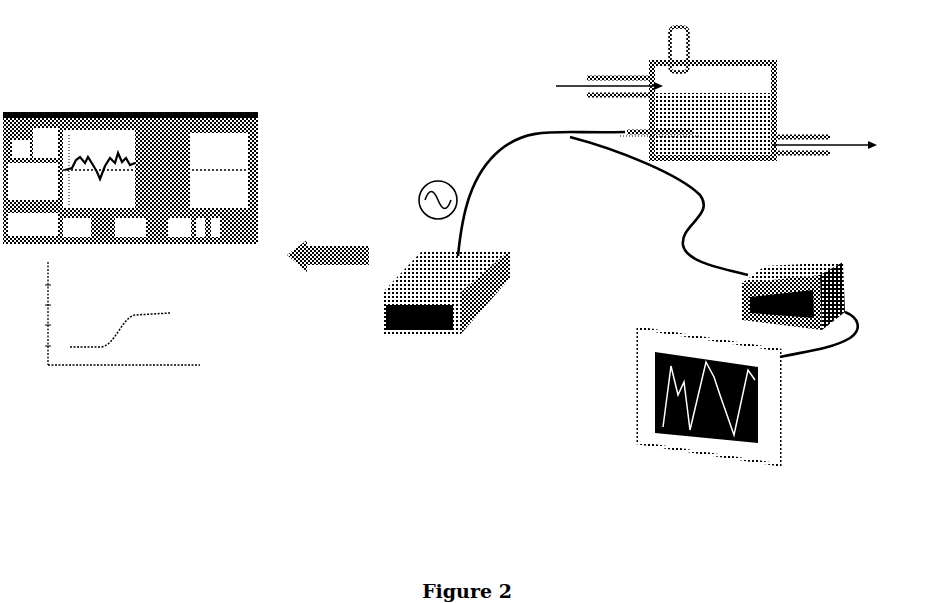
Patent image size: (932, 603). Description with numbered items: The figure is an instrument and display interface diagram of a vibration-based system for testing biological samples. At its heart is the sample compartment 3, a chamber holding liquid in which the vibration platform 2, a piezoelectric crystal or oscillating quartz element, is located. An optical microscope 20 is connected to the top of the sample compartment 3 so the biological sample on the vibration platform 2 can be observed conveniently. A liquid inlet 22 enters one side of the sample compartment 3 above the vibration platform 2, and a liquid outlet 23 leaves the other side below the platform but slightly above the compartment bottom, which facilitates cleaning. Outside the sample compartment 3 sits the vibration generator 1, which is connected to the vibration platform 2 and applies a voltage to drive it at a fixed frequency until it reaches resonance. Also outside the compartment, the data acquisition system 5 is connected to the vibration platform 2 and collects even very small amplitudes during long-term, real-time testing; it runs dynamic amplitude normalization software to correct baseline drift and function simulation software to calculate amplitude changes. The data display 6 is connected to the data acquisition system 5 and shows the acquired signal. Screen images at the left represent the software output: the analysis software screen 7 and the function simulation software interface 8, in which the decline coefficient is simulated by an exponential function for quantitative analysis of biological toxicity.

The vibration generator 1 is at (548, 278).
The vibration platform 2 is at (706, 133).
The sample compartment 3 is at (823, 79).
The data acquisition system 5 is at (860, 293).
The data display 6 is at (585, 365).
The analysis software screen 7 is at (313, 174).
The function simulation software interface 8 is at (245, 337).
The optical microscope 20 is at (663, 42).
The liquid inlet 22 is at (505, 88).
The liquid outlet 23 is at (882, 147).